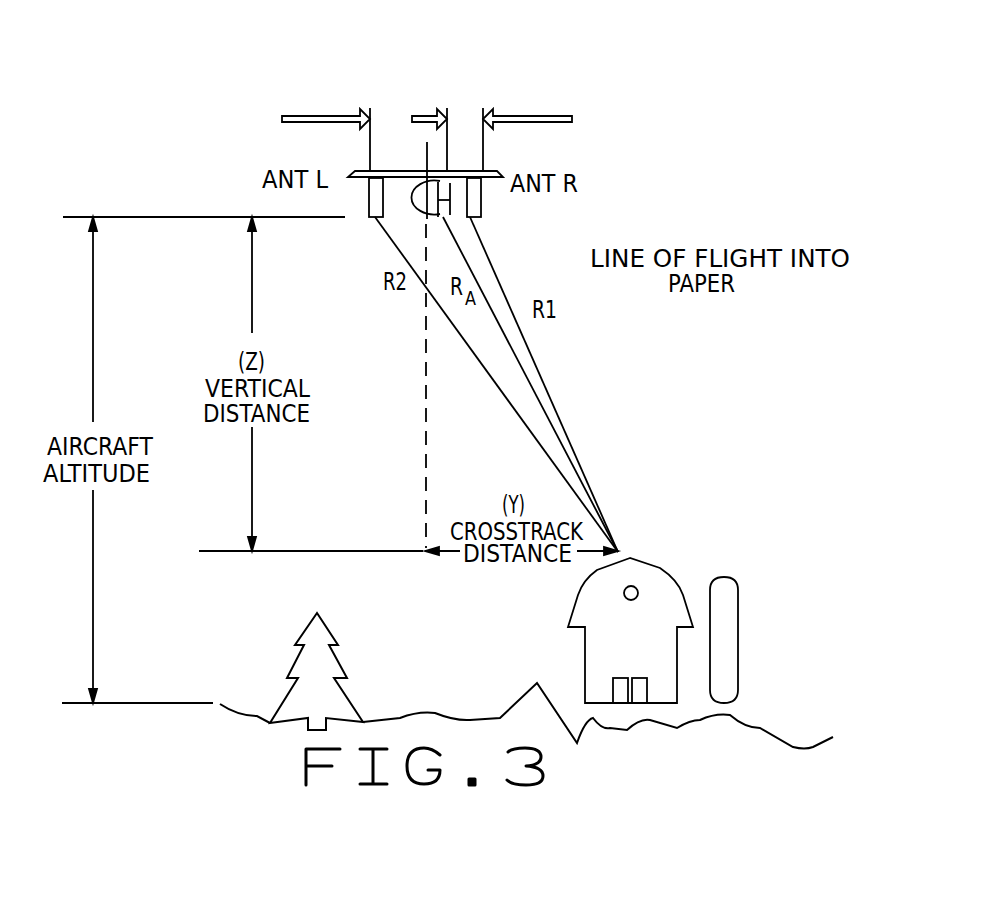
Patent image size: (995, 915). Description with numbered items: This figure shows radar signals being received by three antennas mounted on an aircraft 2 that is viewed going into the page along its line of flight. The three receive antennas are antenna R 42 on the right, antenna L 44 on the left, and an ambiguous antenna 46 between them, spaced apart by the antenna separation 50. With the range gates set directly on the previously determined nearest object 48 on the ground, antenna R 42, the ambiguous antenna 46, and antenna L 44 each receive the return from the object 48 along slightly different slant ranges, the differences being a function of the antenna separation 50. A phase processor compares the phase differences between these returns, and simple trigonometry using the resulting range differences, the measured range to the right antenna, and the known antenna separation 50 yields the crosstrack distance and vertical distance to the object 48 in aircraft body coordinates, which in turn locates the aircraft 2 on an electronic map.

The aircraft 2 is at (495, 171).
The antenna R 42 is at (482, 204).
The antenna L 44 is at (372, 211).
The ambiguous antenna 46 is at (450, 200).
The nearest object 48 is at (672, 550).
The antenna separation 50 is at (436, 123).